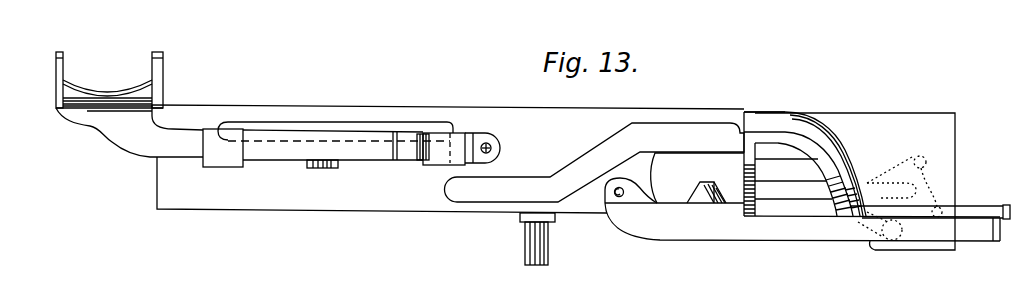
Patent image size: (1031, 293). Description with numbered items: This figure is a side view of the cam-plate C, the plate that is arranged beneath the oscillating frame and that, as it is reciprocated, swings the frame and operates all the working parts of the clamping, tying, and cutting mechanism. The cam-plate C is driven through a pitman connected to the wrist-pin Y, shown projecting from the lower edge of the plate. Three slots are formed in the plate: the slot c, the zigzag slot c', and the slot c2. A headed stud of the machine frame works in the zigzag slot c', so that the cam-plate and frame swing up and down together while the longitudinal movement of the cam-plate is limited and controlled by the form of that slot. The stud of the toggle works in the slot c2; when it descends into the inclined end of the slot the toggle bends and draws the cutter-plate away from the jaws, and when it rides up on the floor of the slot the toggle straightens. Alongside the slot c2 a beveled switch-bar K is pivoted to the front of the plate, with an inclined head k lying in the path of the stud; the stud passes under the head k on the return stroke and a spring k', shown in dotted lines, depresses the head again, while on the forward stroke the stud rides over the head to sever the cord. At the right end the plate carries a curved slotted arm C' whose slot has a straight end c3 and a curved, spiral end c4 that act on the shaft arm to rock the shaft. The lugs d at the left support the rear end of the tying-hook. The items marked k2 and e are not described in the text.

The lugs d is at (116, 70).
The slot c is at (335, 127).
The cam-plate C is at (528, 177).
The zigzag slot c' is at (594, 162).
The slot c2 is at (697, 178).
The straight end of slot c3 is at (985, 210).
The curved spiral end of slot c4 is at (798, 164).
The curved slotted arm C' is at (811, 147).
The inclined head k is at (695, 192).
The beveled switch-bar K is at (715, 189).
The spring k' is at (904, 181).
The pivot roller (dotted) k2 is at (880, 226).
The pivot screw e is at (631, 190).
The wrist-pin Y is at (582, 231).